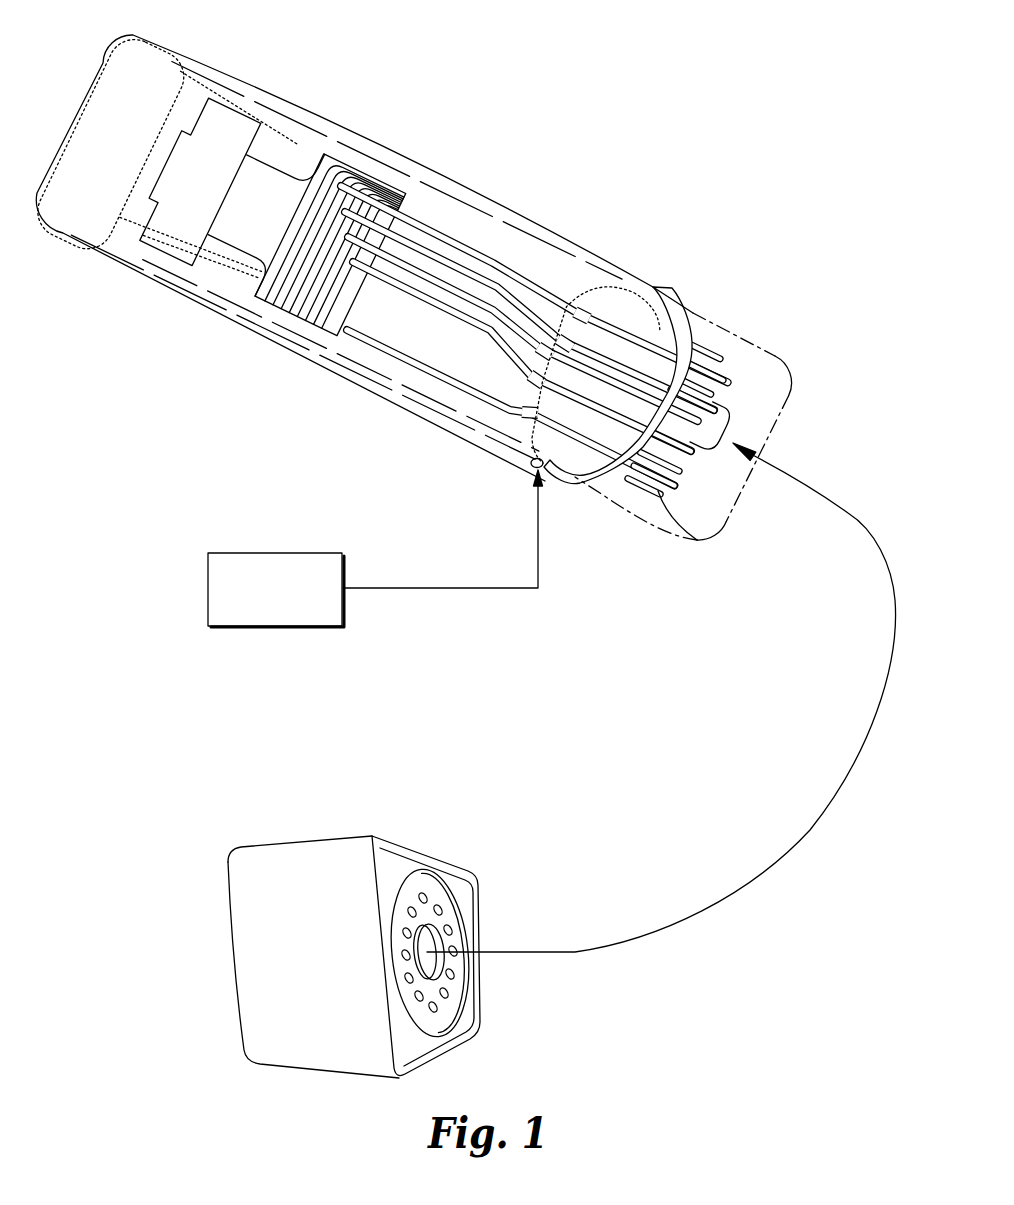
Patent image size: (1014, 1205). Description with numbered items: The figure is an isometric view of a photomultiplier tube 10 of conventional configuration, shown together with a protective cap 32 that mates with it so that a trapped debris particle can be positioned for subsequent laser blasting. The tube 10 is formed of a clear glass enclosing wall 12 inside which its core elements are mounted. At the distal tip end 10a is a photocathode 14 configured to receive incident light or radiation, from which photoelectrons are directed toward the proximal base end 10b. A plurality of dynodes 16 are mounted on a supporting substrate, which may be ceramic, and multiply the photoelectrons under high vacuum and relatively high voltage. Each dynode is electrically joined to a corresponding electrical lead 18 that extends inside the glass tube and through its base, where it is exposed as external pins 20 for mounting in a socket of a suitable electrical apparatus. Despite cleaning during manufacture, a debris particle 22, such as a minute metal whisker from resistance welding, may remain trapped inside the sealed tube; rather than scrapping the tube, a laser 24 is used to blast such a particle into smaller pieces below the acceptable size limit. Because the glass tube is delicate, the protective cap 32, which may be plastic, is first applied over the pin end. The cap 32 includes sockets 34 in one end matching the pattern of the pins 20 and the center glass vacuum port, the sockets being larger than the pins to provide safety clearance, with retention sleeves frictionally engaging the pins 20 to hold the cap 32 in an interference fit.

The photomultiplier tube 10 is at (418, 273).
The tip end 10a is at (97, 71).
The base end 10b is at (687, 320).
The glass enclosing wall 12 is at (143, 275).
The photocathode 14 is at (204, 185).
The dynodes 16 is at (300, 303).
The electrical lead 18 is at (387, 352).
The external pins 20 is at (700, 350).
The debris particles 22 is at (532, 465).
The laser 24 is at (343, 607).
The protective cap 32 is at (337, 840).
The sockets 34 is at (447, 930).